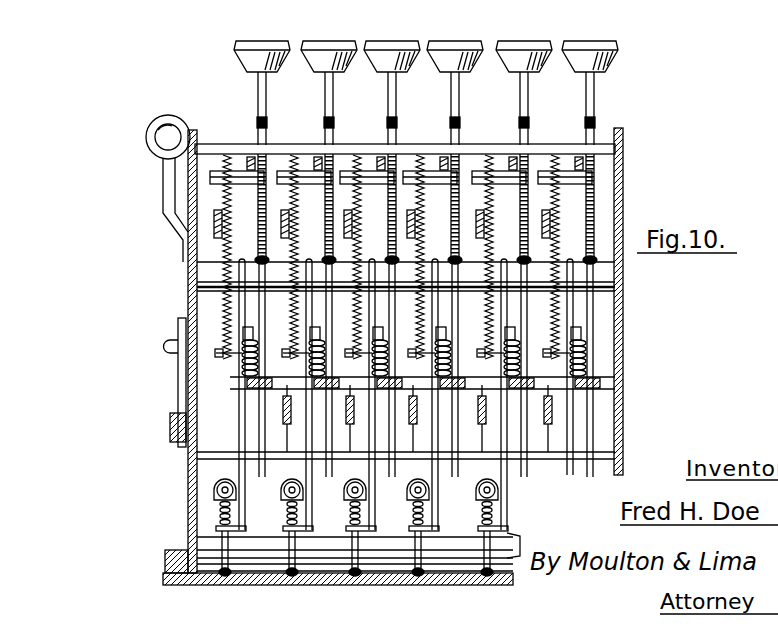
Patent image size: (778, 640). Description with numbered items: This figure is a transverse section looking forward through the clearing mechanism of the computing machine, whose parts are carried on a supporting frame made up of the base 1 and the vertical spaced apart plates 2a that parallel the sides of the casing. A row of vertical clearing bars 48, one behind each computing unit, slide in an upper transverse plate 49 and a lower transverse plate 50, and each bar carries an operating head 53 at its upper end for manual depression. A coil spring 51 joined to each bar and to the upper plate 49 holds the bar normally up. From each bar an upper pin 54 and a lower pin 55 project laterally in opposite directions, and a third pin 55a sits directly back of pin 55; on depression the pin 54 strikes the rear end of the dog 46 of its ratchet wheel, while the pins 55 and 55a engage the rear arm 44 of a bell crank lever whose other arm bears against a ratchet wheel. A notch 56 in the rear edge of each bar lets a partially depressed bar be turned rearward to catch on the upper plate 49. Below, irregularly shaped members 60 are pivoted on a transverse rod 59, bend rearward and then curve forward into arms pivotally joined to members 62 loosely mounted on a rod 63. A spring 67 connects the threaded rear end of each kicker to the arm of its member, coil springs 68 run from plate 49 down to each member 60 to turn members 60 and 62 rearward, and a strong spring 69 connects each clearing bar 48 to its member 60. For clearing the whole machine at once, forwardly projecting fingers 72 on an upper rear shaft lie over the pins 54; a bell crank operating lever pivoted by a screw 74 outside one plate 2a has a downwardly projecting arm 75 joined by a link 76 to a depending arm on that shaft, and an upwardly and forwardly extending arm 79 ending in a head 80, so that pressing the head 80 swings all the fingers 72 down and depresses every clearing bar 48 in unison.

The base 1 is at (322, 560).
The vertical spaced apart plates 2a is at (627, 198).
The rear arm of bell crank lever 44 is at (291, 408).
The dog 46 is at (209, 223).
The clearing bar 48 is at (267, 98).
The upper transverse plate 49 is at (608, 144).
The lower transverse plate 50 is at (609, 460).
The coil spring 51 is at (259, 206).
The operating head 53 is at (325, 42).
The upper pin 54 is at (208, 181).
The lower pin 55 is at (593, 392).
The third pin 55a is at (562, 382).
The notch 56 is at (323, 123).
The transverse rod 59 is at (618, 296).
The irregularly shaped member 60 is at (239, 420).
The member loosely mounted upon rod 62 is at (220, 566).
The rod 63 is at (267, 553).
The spring 67 is at (222, 510).
The coil spring 68 is at (222, 309).
The strong spring 69 is at (240, 372).
The forwardly projecting finger 72 is at (249, 157).
The screw 74 is at (170, 346).
The downwardly projecting arm 75 is at (180, 403).
The link 76 is at (180, 440).
The upwardly and forwardly extending arm 79 is at (168, 213).
The head 80 is at (150, 148).